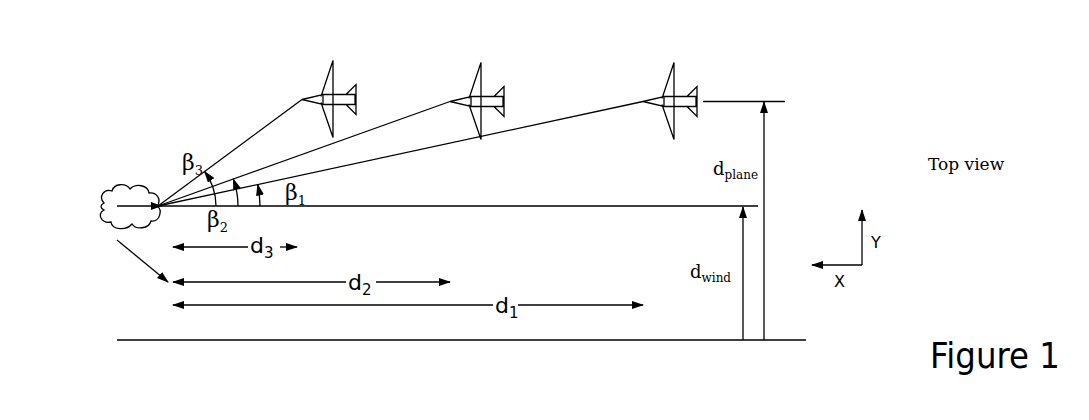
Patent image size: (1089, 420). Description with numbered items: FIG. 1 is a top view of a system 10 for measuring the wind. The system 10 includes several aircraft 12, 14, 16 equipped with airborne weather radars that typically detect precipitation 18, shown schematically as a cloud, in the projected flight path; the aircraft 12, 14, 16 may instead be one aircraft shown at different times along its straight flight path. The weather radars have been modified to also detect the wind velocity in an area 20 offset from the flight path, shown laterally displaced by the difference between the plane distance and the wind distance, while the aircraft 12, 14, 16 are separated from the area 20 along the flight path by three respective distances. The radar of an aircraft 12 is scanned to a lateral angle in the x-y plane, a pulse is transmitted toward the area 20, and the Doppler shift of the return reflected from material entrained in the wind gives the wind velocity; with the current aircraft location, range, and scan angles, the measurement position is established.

The system 10 is at (605, 172).
The aircraft 12 is at (674, 62).
The aircraft 14 is at (481, 63).
The aircraft 16 is at (333, 60).
The precipitation 18 is at (120, 187).
The area offset from the flight path 20 is at (108, 257).